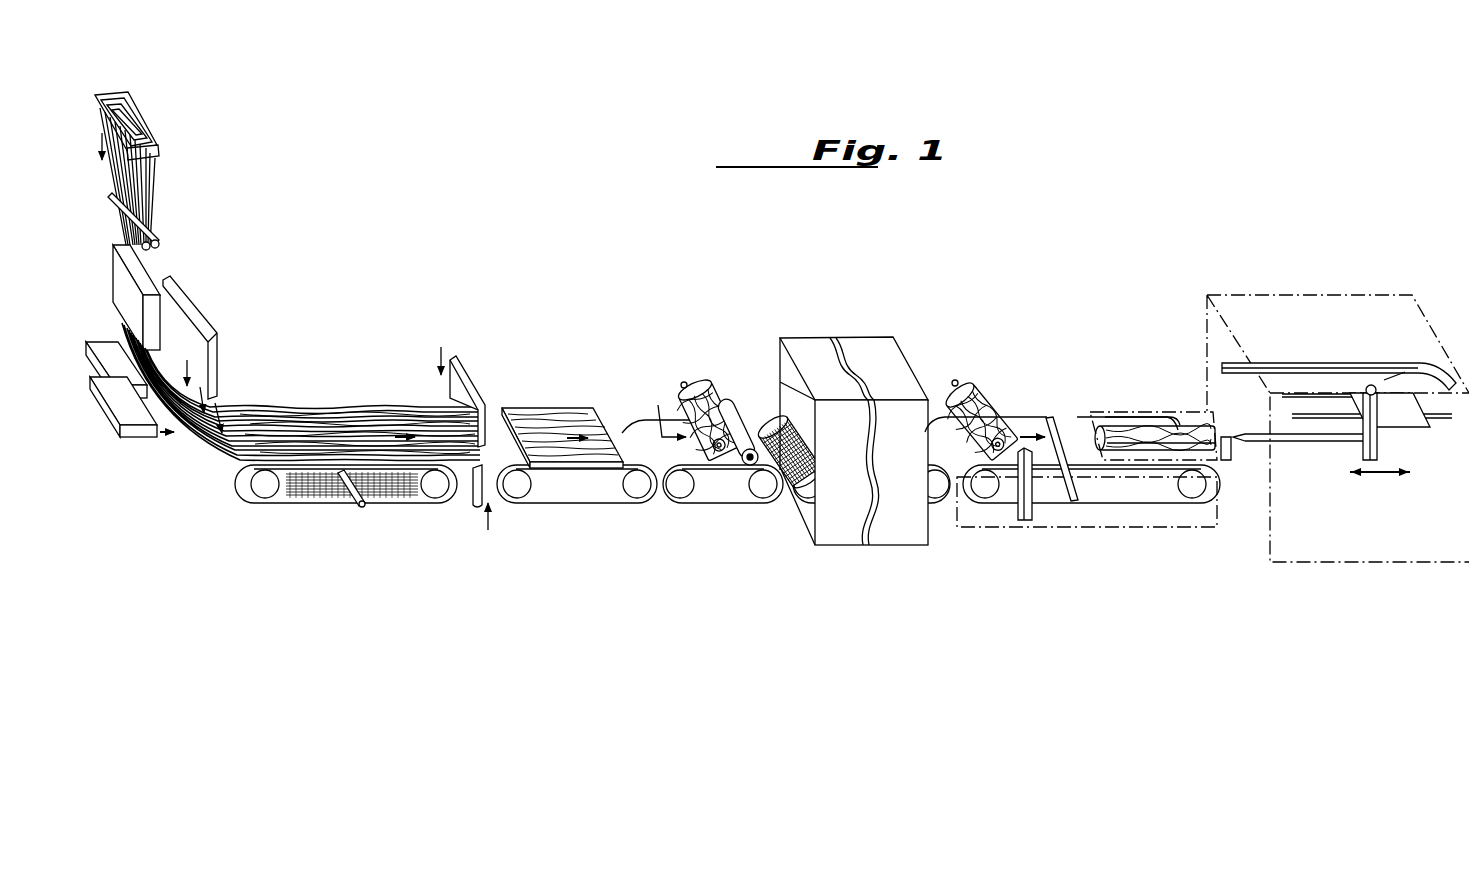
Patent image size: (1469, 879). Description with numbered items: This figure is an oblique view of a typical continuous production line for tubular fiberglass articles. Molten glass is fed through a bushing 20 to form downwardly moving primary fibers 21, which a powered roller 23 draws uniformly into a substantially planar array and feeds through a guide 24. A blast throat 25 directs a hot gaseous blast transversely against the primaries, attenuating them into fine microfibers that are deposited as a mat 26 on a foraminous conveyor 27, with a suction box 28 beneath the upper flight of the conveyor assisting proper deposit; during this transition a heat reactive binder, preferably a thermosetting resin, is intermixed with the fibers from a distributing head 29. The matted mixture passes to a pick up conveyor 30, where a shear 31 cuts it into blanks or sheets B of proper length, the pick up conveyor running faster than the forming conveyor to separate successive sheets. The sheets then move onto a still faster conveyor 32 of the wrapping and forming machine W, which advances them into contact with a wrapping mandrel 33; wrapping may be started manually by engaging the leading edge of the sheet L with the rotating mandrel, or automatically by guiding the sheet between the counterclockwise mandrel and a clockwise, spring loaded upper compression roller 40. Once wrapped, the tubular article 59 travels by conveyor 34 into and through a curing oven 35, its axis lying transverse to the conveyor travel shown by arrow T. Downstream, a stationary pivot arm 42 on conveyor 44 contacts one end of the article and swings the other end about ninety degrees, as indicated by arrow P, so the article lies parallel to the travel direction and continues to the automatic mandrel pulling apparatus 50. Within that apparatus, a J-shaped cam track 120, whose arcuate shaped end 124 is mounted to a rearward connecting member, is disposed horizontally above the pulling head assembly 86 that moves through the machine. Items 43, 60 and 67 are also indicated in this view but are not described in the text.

The bushing 20 is at (160, 150).
The primary fibers 21 is at (150, 197).
The powered roller 23 is at (160, 243).
The guide 24 is at (132, 290).
The blast throat 25 is at (118, 437).
The mat 26 is at (303, 420).
The foraminous conveyor 27 is at (316, 502).
The suction box 28 is at (393, 500).
The distributing head 29 is at (212, 370).
The pick up conveyor 30 is at (597, 492).
The shear 31 is at (470, 390).
The conveyor 32 is at (715, 492).
The wrapping mandrel 33 is at (686, 385).
The conveyor 34 is at (808, 480).
The curing oven 35 is at (893, 527).
The spring loaded upper compression roller 40 is at (725, 405).
The stationary pivot arm 42 is at (1030, 512).
The transfer station 43 is at (1163, 528).
The conveyor 44 is at (1077, 415).
The automatic mandrel pulling apparatus 50 is at (1325, 278).
The tubular article 59 is at (700, 388).
The roll receiving station 60 is at (1108, 410).
The stop member 67 is at (1230, 458).
The pulling head assembly 86 is at (1418, 434).
The cam track 120 is at (1310, 354).
The arcuate shaped end 124 is at (1437, 372).
The blanks or sheets B is at (545, 408).
The arrow T is at (567, 438).
The leading edge of the sheet L is at (600, 415).
The wrapping and forming machine W is at (696, 352).
The arrow P is at (1060, 418).